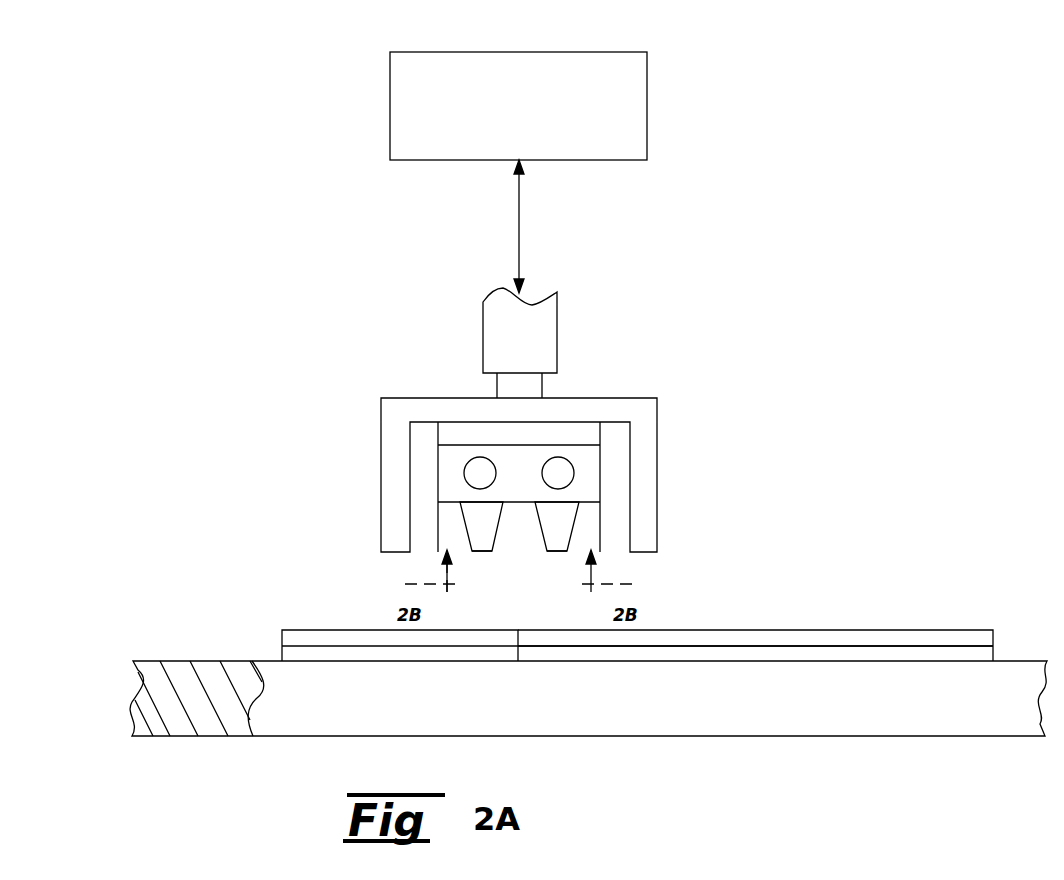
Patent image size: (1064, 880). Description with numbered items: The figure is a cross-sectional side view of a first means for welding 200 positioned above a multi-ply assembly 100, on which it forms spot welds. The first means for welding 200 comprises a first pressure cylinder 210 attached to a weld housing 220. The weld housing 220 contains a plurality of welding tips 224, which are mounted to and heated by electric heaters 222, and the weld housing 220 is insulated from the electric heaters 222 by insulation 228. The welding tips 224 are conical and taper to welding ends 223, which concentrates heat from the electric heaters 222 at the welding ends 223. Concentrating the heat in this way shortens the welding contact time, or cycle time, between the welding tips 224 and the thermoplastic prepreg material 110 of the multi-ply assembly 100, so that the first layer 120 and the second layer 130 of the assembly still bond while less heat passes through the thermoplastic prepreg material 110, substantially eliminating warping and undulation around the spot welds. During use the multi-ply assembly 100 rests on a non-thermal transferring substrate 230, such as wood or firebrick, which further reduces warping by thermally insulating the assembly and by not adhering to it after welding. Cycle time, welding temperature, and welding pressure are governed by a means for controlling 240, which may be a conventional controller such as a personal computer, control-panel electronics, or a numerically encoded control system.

The multi-ply assembly 100 is at (287, 606).
The thermoplastic prepreg material 110 is at (338, 630).
The first layer 120 is at (872, 650).
The second layer 130 is at (805, 635).
The first means for welding 200 is at (344, 380).
The first pressure cylinder 210 is at (483, 302).
The weld housing 220 is at (381, 434).
The electric heaters 222 is at (480, 457).
The welding ends 223 is at (486, 552).
The welding tips 224 is at (463, 520).
The insulation 228 is at (620, 438).
The non-thermal transferring substrate 230 is at (182, 661).
The means for controlling 240 is at (390, 102).